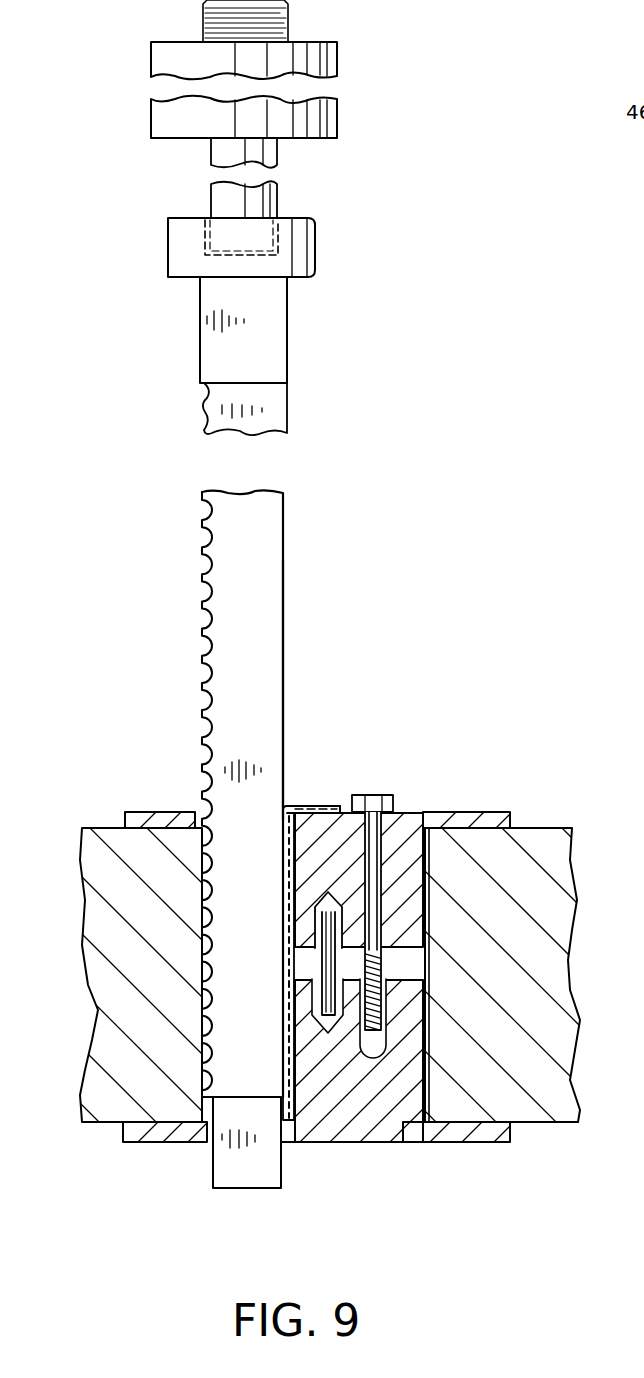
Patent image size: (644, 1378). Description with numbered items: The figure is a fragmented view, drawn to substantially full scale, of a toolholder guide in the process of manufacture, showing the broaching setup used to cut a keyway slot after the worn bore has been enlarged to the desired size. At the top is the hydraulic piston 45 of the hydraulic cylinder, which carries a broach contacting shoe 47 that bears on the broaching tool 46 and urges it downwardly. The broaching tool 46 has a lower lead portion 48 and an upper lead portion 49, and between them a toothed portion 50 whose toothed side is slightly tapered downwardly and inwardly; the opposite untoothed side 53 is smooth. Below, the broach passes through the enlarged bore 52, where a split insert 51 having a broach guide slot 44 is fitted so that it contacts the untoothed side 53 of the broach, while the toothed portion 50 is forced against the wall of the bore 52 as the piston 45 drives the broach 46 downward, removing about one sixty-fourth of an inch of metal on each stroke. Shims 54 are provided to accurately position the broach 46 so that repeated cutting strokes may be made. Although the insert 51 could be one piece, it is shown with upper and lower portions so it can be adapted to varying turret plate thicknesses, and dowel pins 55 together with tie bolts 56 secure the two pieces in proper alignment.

The broach guide slot 44 is at (288, 1130).
The piston 45 is at (275, 200).
The broaching tool 46 is at (245, 793).
The broach contacting shoe 47 is at (302, 250).
The lower lead portion 48 is at (275, 355).
The upper lead portion 49 is at (225, 1165).
The toothed portion 50 is at (203, 600).
The split insert 51 is at (395, 833).
The enlarged bore 52 is at (425, 903).
The untoothed side 53 is at (283, 683).
The shims 54 is at (305, 808).
The dowel pins 55 is at (310, 1010).
The tie bolts 56 is at (372, 797).